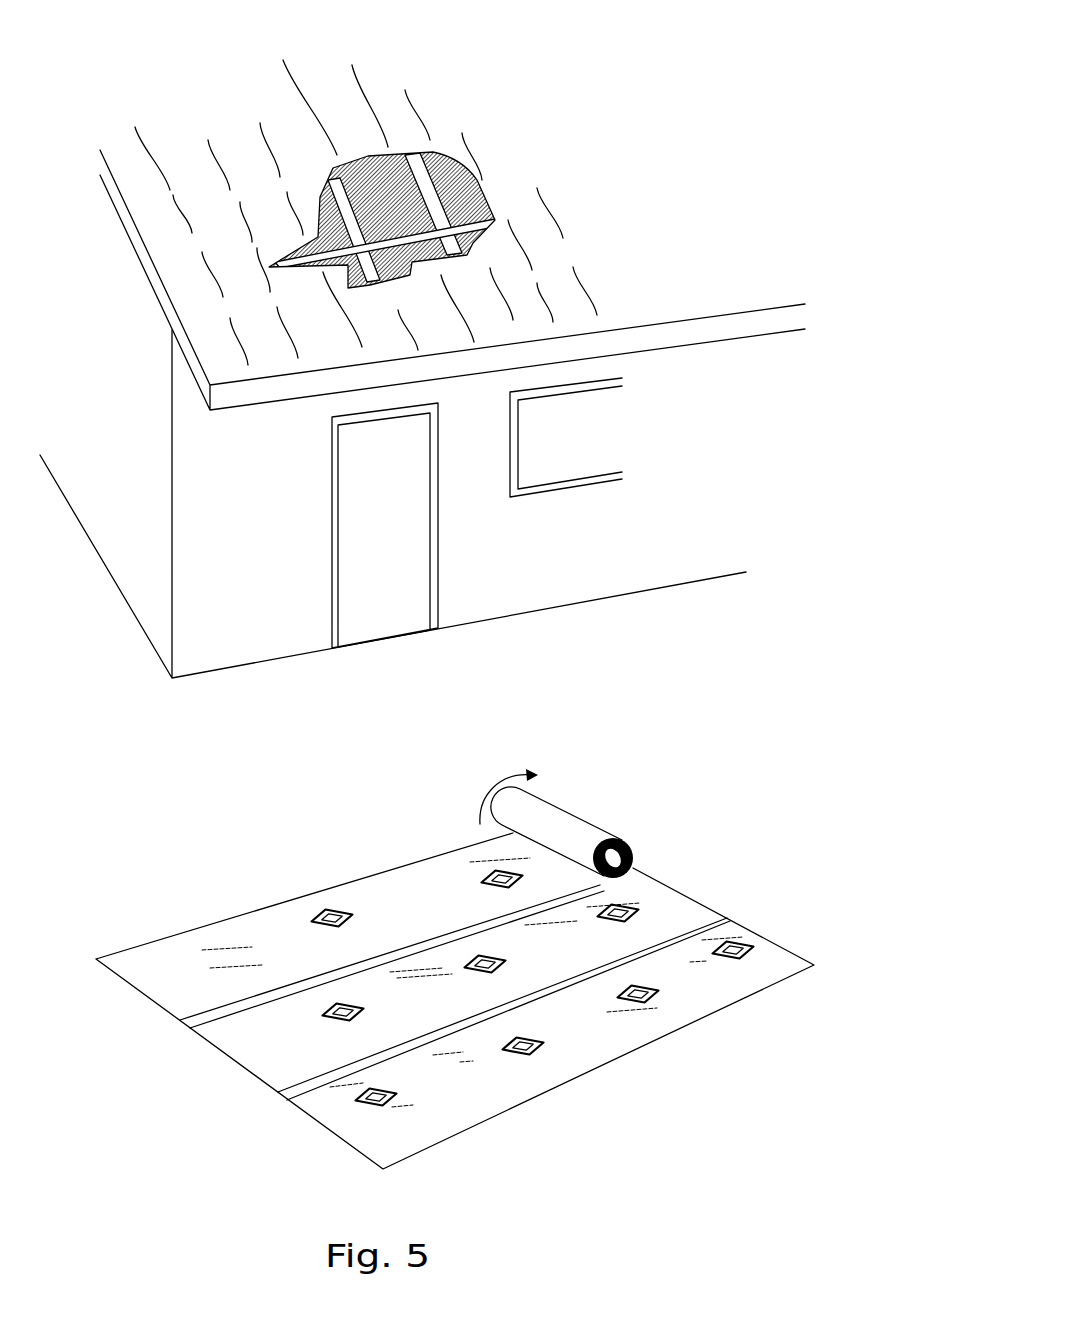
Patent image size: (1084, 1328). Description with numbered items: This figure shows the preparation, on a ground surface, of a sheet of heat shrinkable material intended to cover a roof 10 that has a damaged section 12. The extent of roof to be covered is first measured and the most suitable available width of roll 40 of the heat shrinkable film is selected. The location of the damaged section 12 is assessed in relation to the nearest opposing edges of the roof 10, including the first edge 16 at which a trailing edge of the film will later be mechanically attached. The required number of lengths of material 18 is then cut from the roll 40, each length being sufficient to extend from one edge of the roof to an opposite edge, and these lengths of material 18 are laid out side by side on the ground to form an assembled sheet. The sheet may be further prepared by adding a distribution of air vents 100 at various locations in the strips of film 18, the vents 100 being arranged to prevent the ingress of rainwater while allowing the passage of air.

The roofing system 10 is at (652, 125).
The shingle 12 is at (402, 198).
The roof deck 16 is at (303, 415).
The roofing underlayment strip 18 is at (168, 943).
The roll of underlayment 40 is at (587, 833).
The patch 100 is at (333, 910).